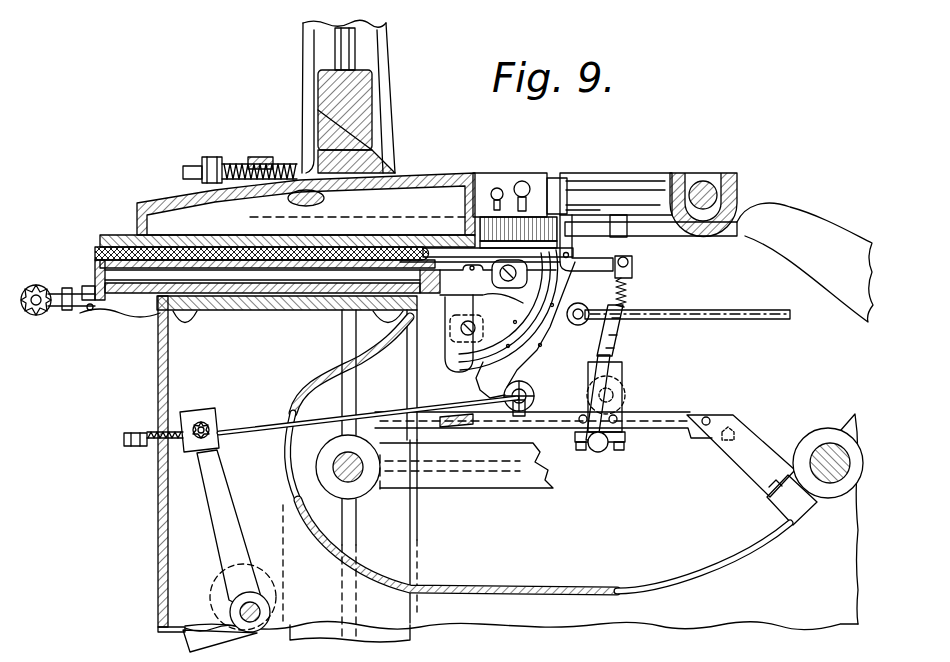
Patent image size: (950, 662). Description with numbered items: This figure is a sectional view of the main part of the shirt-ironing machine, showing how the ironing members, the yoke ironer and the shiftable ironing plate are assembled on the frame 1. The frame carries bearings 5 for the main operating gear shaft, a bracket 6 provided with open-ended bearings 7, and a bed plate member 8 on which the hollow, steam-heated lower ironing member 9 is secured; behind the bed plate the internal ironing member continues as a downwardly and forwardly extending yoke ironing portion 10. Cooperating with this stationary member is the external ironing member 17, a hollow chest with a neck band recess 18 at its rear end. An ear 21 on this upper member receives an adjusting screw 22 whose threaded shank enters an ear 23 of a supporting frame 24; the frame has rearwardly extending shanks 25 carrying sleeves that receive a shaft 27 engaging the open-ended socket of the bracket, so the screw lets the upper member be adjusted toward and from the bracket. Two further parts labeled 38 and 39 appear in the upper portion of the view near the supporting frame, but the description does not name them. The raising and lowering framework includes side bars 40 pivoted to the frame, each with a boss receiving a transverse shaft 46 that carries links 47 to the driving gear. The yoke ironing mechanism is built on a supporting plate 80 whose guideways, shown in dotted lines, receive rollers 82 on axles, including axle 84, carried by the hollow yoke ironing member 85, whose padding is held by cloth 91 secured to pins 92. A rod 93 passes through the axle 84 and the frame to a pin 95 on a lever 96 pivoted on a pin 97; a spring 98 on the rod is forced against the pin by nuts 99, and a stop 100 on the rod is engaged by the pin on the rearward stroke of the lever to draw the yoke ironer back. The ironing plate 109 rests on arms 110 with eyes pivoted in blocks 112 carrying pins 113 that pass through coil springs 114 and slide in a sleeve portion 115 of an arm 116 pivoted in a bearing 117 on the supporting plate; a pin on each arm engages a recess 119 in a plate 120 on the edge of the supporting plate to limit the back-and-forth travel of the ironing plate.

The frame 1 is at (156, 576).
The bearings 5 is at (818, 428).
The bracket 6 is at (820, 235).
The open-ended bearings 7 is at (733, 180).
The bed plate member 8 is at (268, 311).
The lower ironing member 9 is at (92, 268).
The yoke ironing portion 10 is at (510, 368).
The external ironing member 17 is at (150, 200).
The neck band recess 18 is at (478, 200).
The ear 21 is at (214, 157).
The adjusting screw 22 is at (246, 165).
The ear 23 is at (261, 157).
The supporting frame 24 is at (446, 176).
The shanks 25 is at (614, 182).
The shaft 27 is at (704, 181).
The ratchet 38 is at (492, 216).
The column 39 is at (396, 170).
The side bars 40 is at (418, 549).
The transverse shaft 46 is at (356, 478).
The links 47 is at (488, 490).
The supporting plate 80 is at (648, 432).
The rollers 82 is at (533, 402).
The axle 84 is at (520, 414).
The yoke ironing member 85 is at (627, 335).
The cloth 91 is at (630, 290).
The pins 92 is at (500, 398).
The rod 93 is at (275, 420).
The pin 95 is at (203, 420).
The lever 96 is at (224, 545).
The pin 97 is at (254, 625).
The spring 98 is at (170, 432).
The nuts 99 is at (136, 447).
The stop 100 is at (224, 430).
The ironing plate 109 is at (114, 246).
The arms 110 is at (612, 268).
The blocks 112 is at (640, 279).
The pins 113 is at (630, 350).
The coil springs 114 is at (665, 300).
The sleeve portion 115 is at (690, 323).
The arm 116 is at (625, 390).
The bearing 117 is at (628, 452).
The recess 119 is at (640, 372).
The plate 120 is at (640, 412).